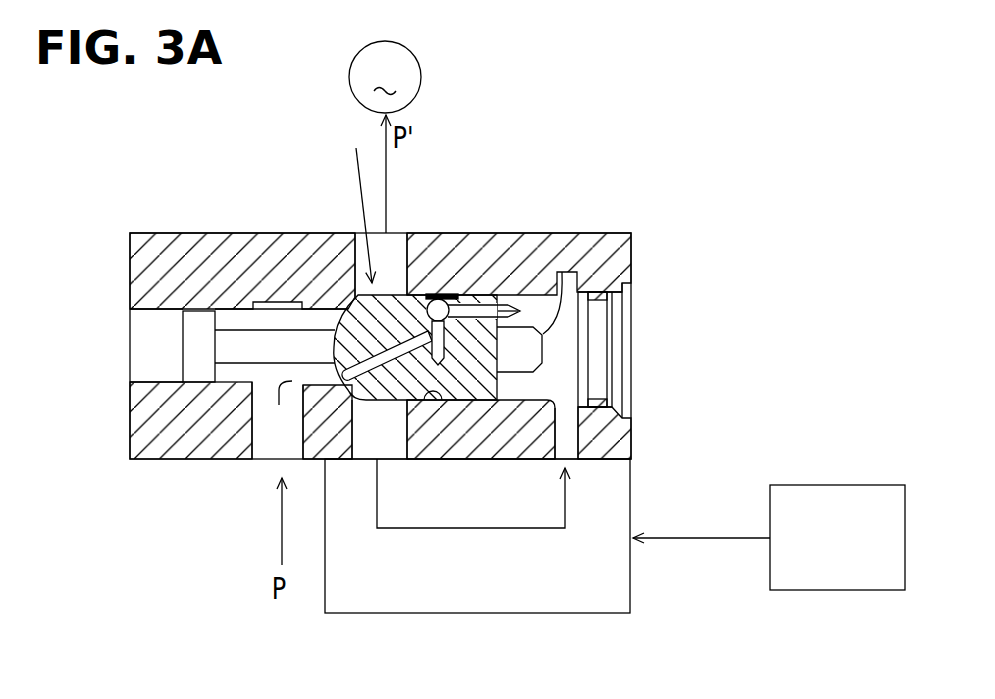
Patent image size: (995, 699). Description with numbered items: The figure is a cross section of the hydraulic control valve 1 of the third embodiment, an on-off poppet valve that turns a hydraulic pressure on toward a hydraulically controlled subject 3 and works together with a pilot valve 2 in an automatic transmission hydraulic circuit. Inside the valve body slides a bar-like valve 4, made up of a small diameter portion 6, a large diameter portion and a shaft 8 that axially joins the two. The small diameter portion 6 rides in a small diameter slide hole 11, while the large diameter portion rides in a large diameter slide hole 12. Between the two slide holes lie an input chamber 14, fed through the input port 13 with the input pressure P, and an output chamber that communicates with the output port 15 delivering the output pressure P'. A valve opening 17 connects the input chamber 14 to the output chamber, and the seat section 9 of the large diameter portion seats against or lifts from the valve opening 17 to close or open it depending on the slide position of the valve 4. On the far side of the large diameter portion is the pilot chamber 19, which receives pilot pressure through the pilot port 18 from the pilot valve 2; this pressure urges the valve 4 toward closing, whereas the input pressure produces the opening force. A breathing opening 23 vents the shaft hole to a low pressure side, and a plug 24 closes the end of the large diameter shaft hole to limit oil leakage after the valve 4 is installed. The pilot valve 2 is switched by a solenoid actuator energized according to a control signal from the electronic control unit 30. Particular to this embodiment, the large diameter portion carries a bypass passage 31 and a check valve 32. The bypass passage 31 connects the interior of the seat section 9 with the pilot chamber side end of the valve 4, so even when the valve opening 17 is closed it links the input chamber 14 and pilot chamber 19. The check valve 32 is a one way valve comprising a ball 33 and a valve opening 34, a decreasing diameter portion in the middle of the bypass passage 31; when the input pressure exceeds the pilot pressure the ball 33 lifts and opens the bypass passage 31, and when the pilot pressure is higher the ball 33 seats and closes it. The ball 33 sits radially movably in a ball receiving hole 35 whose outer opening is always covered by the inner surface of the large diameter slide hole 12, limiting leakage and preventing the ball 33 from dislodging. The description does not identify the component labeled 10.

The hydraulic control valve 1 is at (165, 218).
The pilot valve 2 is at (457, 613).
The hydraulically controlled subject 3 is at (385, 137).
The valve 4 is at (358, 197).
The small diameter portion 6 is at (190, 312).
The shaft 8 is at (328, 337).
The seat section 9 is at (331, 362).
The plunger 10 is at (560, 313).
The small diameter slide hole 11 is at (150, 308).
The large diameter slide hole 12 is at (437, 402).
The input port 13 is at (270, 447).
The input chamber 14 is at (279, 318).
The output port 15 is at (384, 258).
The valve opening 17 is at (346, 314).
The pilot port 18 is at (567, 436).
The pilot chamber 19 is at (568, 312).
The breathing opening 23 is at (150, 345).
The plug 24 is at (613, 372).
The electronic control unit 30 is at (848, 498).
The bypass passage 31 is at (388, 403).
The check valve 32 is at (462, 297).
The ball 33 is at (455, 297).
The valve opening 34 is at (476, 405).
The ball receiving hole 35 is at (443, 297).